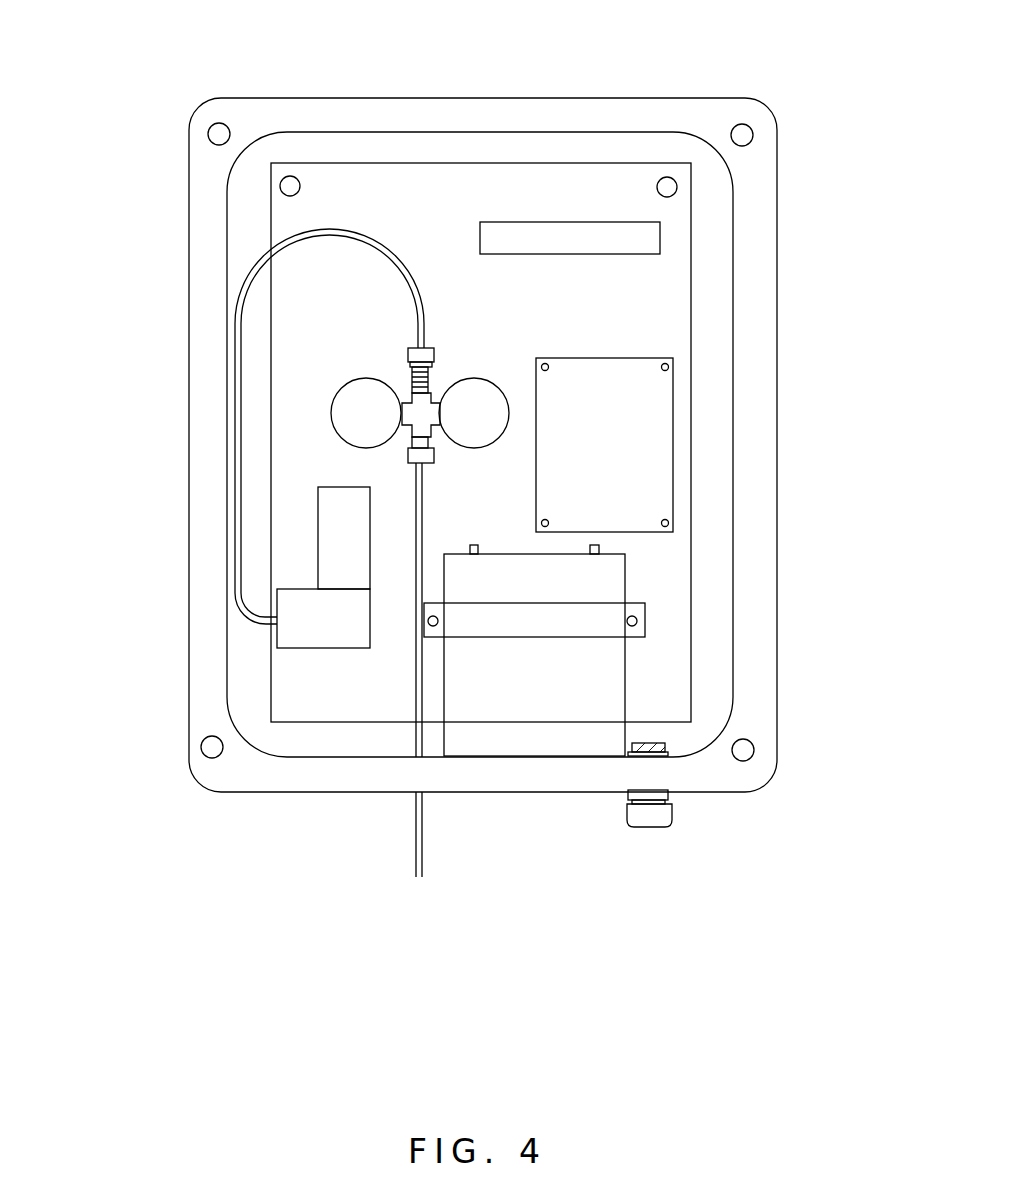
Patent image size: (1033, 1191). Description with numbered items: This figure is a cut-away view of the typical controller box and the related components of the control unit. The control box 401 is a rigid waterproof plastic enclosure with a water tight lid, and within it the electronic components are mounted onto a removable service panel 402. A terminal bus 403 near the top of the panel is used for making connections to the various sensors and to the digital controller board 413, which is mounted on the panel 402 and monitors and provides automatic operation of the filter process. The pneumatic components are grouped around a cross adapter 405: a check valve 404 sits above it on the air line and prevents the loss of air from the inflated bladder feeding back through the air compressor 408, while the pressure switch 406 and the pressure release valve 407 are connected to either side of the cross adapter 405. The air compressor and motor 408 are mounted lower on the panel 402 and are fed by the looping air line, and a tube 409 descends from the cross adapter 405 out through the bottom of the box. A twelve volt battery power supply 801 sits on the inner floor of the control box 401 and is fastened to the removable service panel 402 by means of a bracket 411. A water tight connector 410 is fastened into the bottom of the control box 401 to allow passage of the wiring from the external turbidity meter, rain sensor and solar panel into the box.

The control box 401 is at (325, 98).
The removable service panel 402 is at (522, 193).
The terminal bus 403 is at (621, 220).
The check valve 404 is at (412, 380).
The cross adapter 405 is at (412, 412).
The pressure switch 406 is at (333, 433).
The pressure release valve 407 is at (470, 447).
The air compressor 408 is at (335, 574).
The sample tube 409 is at (413, 835).
The water tight connector 410 is at (643, 830).
The bracket 411 is at (597, 629).
The digital controller board 413 is at (658, 447).
The power supply 801 is at (603, 574).